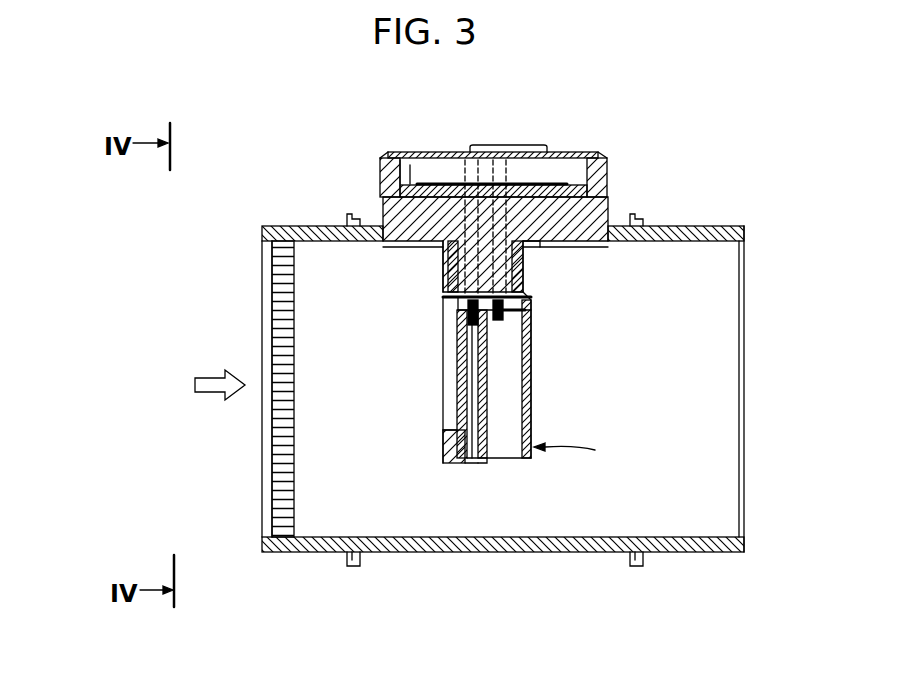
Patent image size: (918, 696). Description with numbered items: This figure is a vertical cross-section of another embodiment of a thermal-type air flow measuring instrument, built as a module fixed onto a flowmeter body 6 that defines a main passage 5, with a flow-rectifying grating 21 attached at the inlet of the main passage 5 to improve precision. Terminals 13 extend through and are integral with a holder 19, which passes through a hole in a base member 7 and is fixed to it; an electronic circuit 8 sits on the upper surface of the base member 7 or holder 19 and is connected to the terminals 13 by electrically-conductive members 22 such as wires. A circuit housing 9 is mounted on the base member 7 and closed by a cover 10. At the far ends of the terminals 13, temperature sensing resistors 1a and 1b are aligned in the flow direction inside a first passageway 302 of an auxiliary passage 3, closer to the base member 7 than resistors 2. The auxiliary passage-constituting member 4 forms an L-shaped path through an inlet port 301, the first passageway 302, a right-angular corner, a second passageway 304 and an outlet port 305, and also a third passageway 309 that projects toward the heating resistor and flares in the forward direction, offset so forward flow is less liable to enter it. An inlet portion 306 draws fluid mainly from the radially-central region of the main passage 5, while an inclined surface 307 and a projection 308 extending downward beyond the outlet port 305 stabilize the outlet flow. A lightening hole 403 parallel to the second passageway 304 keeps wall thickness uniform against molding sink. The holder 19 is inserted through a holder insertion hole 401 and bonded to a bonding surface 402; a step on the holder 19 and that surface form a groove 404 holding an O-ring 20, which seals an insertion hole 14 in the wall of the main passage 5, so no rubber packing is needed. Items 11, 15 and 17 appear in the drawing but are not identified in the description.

The temperature sensing resistor 1a is at (465, 314).
The temperature sensing resistor 1b is at (465, 300).
The resistor 2 is at (531, 325).
The auxiliary passage 3 is at (525, 412).
The auxiliary passage-constituting member 4 is at (575, 452).
The main passage 5 is at (740, 286).
The flowmeter body 6 is at (727, 225).
The base member 7 is at (612, 200).
The electronic circuit 8 is at (592, 152).
The circuit housing 9 is at (610, 176).
The cover 10 is at (395, 165).
The plate 11 is at (555, 152).
The terminal 13 is at (458, 388).
The insertion hole 14 is at (440, 247).
The seal 15 is at (385, 190).
The flow direction 17 is at (220, 404).
The holder 19 is at (523, 265).
The O-ring 20 is at (575, 240).
The flow-rectifying grating 21 is at (272, 480).
The electrically-conductive member 22 is at (420, 182).
The inlet port 301 is at (460, 325).
The first passageway 302 is at (455, 310).
The second passageway 304 is at (522, 370).
The outlet port 305 is at (538, 462).
The inlet portion 306 is at (450, 420).
The inclined surface 307 is at (452, 462).
The projection 308 is at (468, 465).
The third passageway 309 is at (531, 302).
The holder insertion hole 401 is at (460, 262).
The bonding surface 402 is at (458, 180).
The lightening hole 403 is at (490, 462).
The groove 404 is at (525, 195).